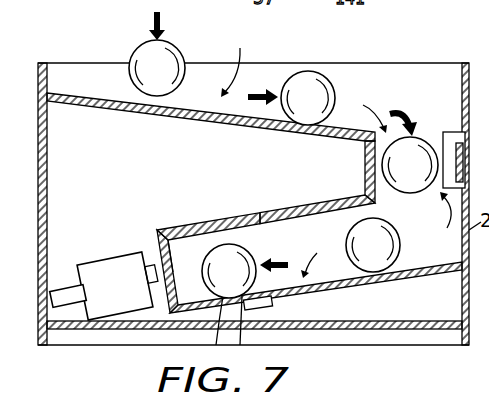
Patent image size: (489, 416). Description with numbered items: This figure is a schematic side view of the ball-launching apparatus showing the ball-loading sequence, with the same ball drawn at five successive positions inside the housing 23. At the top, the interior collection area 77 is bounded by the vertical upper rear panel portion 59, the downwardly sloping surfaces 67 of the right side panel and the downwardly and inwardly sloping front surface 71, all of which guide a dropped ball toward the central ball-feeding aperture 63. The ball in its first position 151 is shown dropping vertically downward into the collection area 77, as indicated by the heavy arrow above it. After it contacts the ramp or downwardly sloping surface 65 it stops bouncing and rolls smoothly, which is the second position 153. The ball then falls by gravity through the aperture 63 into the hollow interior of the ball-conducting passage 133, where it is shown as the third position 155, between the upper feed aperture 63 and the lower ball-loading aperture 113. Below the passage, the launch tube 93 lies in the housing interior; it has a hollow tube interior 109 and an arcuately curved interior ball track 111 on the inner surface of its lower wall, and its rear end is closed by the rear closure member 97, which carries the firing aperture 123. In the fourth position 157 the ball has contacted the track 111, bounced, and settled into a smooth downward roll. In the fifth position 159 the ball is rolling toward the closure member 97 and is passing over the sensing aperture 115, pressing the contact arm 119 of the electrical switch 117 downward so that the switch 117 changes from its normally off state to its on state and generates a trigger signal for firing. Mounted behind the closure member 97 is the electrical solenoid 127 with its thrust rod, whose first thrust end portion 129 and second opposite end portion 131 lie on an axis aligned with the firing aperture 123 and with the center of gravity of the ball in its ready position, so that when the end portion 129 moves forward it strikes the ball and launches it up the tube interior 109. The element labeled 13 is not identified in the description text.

The housing 23 is at (35, 70).
The vertical upper rear panel portion 59 is at (48, 76).
The downwardly and inwardly sloping front surface 71 is at (462, 80).
The gate 13 is at (464, 145).
The first thrust end portion 129 is at (153, 325).
The downwardly sloping surface 65 is at (153, 113).
The ball-conducting passage 133 is at (362, 158).
The tube interior 109 is at (310, 193).
The launch tube 93 is at (230, 205).
The rear closure member 97 is at (160, 248).
The firing aperture 123 is at (180, 246).
The electrical switch 117 is at (281, 303).
The sensing aperture 115 is at (216, 340).
The contact arm 119 is at (240, 345).
The electrical solenoid 127 is at (128, 291).
The second opposite end portion 131 is at (65, 288).
The ball in first position 151 is at (134, 49).
The ball in second position 153 is at (311, 81).
The ball in third position 155 is at (421, 148).
The ball in fourth position 157 is at (393, 229).
The ball in fifth position 159 is at (248, 256).
The interior collection area 77 is at (235, 64).
The ball-feeding aperture 63 is at (370, 109).
The interior ball track 111 is at (317, 259).
The lower ball-loading aperture 113 is at (437, 226).
The downwardly sloping surfaces 67 is at (380, 80).